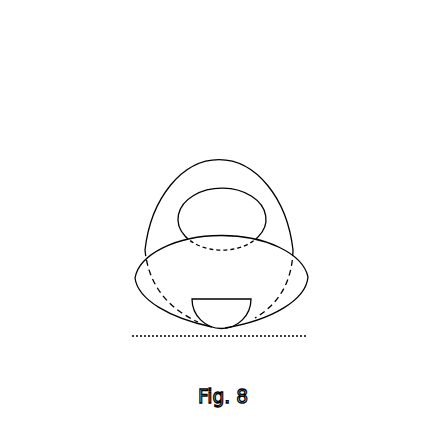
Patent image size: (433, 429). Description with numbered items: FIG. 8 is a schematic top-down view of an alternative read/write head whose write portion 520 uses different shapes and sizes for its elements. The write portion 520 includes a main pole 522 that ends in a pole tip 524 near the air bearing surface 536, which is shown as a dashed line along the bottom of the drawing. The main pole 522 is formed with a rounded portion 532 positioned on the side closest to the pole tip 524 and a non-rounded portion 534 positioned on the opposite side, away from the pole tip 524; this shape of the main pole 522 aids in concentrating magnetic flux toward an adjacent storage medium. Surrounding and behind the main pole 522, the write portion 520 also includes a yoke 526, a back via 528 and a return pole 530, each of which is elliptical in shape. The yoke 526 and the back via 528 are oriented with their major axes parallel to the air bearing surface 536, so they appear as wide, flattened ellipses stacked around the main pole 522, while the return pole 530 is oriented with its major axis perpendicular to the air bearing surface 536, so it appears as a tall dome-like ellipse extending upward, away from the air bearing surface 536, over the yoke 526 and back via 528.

The write portion 520 is at (212, 110).
The main pole 522 is at (218, 327).
The pole tip 524 is at (222, 328).
The yoke 526 is at (135, 278).
The back via 528 is at (259, 198).
The return pole 530 is at (272, 168).
The rounded portion 532 is at (251, 314).
The non-rounded portion 534 is at (238, 296).
The air bearing surface 536 is at (152, 338).